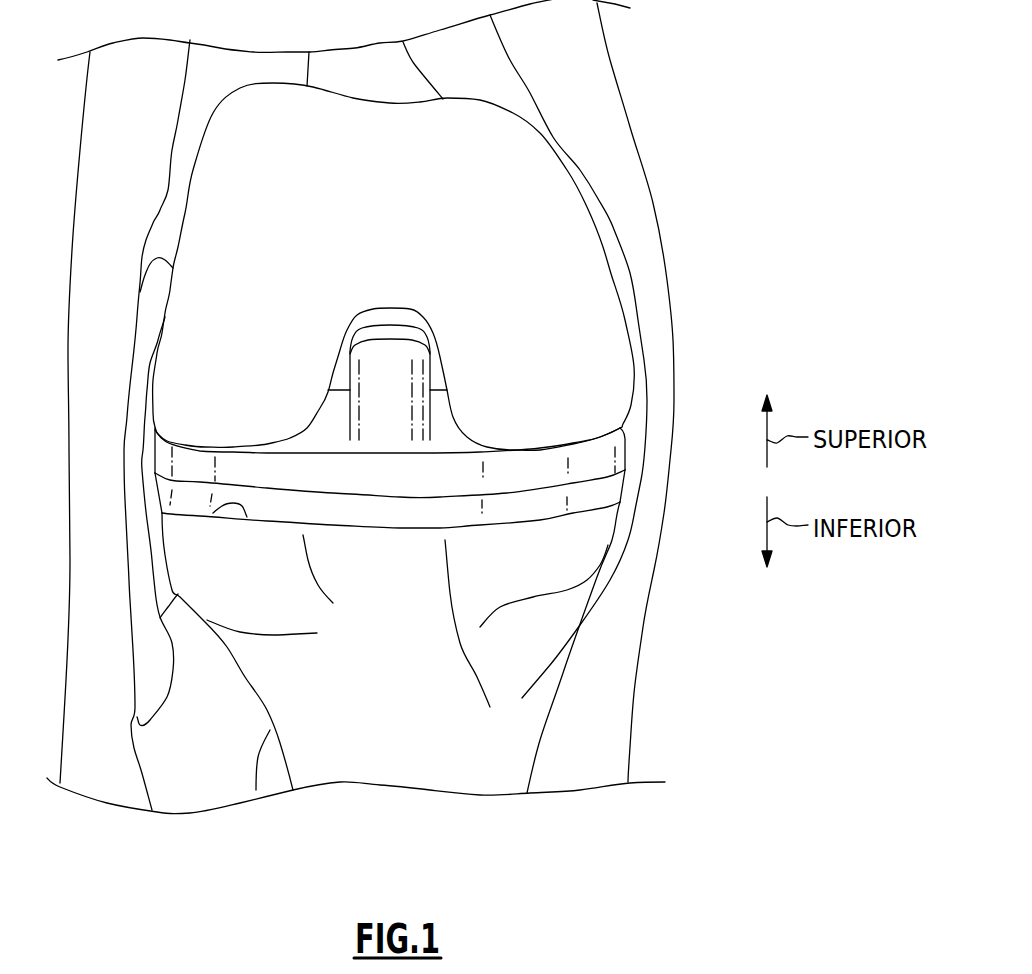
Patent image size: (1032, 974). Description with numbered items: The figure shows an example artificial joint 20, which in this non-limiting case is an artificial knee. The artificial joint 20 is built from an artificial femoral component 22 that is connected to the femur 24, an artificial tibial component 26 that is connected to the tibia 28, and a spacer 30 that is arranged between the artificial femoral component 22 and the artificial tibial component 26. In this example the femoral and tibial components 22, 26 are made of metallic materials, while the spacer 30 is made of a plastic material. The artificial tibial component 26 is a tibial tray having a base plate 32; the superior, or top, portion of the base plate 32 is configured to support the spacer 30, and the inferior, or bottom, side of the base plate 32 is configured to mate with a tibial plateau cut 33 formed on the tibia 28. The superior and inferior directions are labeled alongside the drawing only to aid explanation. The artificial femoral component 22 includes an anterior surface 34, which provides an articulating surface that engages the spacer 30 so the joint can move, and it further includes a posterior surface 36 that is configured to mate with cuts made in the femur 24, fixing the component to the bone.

The artificial joint 20 is at (662, 292).
The artificial femoral component 22 is at (570, 240).
The femur 24 is at (480, 65).
The artificial tibial component 26 is at (617, 502).
The tibia 28 is at (513, 662).
The spacer 30 is at (597, 470).
The base plate 32 is at (188, 500).
The tibial plateau cut 33 is at (213, 513).
The anterior surface 34 is at (590, 370).
The posterior surface 36 is at (176, 183).